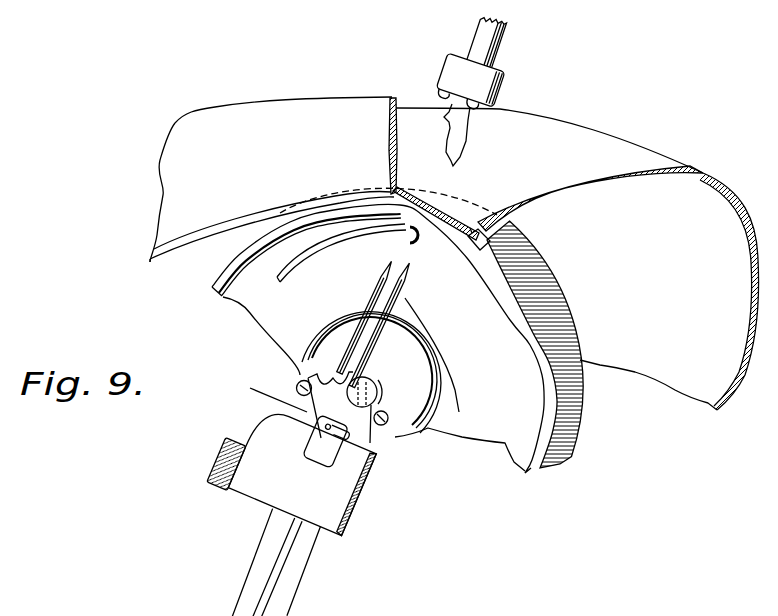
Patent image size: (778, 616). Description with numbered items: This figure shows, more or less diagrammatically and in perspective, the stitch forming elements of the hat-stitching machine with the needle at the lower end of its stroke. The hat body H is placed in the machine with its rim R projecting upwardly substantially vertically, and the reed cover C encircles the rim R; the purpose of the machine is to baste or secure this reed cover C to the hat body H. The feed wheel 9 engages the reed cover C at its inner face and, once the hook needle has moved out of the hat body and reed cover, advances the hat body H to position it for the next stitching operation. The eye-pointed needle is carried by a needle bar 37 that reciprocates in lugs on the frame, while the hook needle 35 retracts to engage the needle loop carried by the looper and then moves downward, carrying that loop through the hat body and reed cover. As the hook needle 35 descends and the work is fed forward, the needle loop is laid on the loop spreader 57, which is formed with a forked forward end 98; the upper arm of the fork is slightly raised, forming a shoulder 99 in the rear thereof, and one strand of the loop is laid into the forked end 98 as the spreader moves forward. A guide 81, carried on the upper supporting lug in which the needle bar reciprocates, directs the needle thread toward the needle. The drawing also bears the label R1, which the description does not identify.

The rim R is at (327, 103).
The hat body H is at (590, 133).
The shoulder 99 is at (422, 222).
The reed cover C is at (461, 229).
The forked forward end 98 is at (406, 237).
The loop spreader 57 is at (333, 236).
The hook needle 35 is at (372, 304).
The needle bar 37 is at (386, 316).
The stop block R1 is at (482, 251).
The feed wheel 9 is at (560, 296).
The guide 81 is at (318, 456).